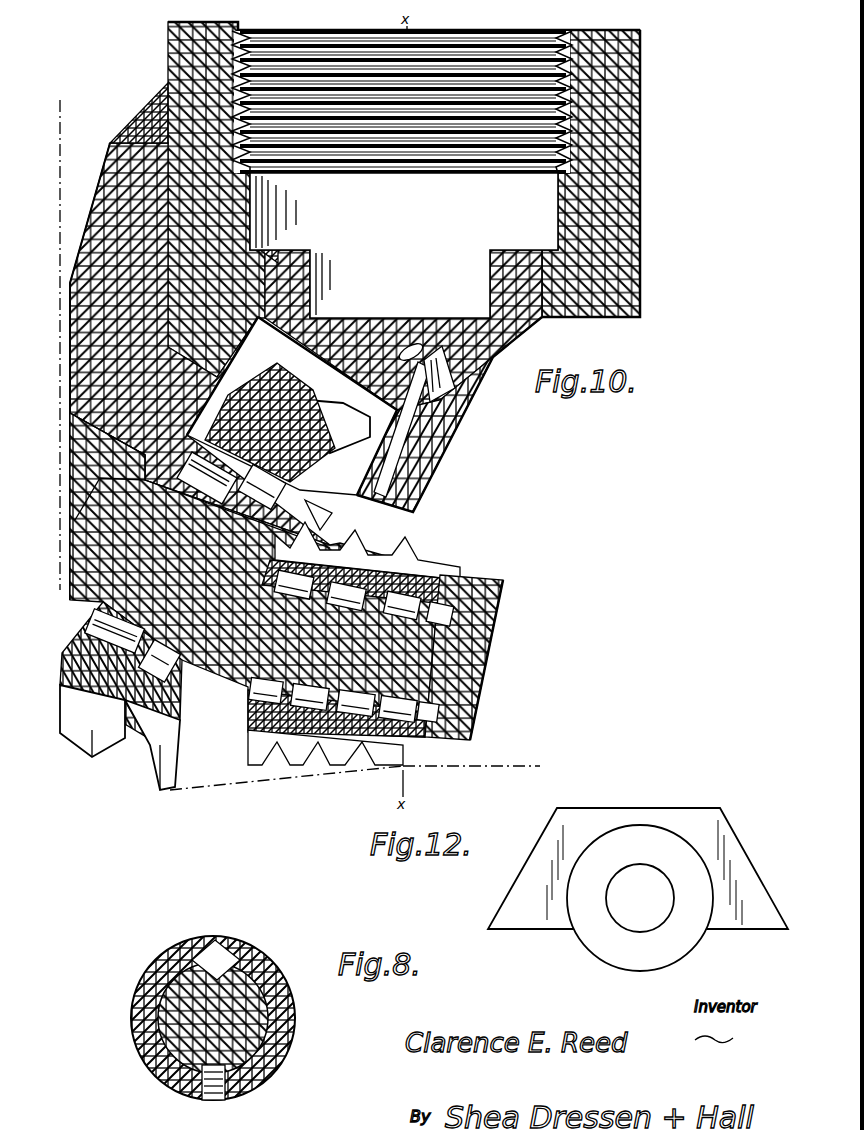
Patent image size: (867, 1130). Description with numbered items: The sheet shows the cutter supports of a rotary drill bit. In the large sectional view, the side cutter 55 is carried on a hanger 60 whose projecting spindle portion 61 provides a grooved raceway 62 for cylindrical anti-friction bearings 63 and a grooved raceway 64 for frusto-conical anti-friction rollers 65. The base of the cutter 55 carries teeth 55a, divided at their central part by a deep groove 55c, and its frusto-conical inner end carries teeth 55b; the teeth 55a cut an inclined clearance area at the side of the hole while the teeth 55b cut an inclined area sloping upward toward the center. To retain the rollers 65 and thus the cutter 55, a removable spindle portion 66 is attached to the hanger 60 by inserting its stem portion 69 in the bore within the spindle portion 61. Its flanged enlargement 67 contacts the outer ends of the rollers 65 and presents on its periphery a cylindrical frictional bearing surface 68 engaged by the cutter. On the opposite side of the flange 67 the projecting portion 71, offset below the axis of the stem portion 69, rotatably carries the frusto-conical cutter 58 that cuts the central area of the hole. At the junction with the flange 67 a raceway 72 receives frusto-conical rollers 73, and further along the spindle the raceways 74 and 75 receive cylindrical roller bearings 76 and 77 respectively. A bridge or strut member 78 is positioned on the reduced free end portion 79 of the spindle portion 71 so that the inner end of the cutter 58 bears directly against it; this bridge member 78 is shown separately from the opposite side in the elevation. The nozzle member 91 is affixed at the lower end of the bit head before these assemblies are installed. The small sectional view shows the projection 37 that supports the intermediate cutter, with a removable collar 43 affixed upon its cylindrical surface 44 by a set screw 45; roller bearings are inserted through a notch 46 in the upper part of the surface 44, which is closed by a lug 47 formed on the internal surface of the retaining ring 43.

In FIG. 10, the hanger 60 is at (83, 383).
In FIG. 10, the nozzle member 91 is at (405, 265).
In FIG. 10, the projecting spindle portion 61 is at (240, 578).
In FIG. 10, the cylindrical frictional bearing surface 68 is at (307, 437).
In FIG. 10, the removable spindle portion 66 is at (352, 460).
In FIG. 10, the stem portion 69 is at (98, 507).
In FIG. 10, the projecting portion 71 is at (330, 627).
In FIG. 10, the frusto-conical cutter 58 is at (405, 585).
In FIG. 10, the bridge or strut member 78 is at (477, 590).
In FIG. 12, the bridge or strut member 78 is at (662, 817).
In FIG. 10, the reduced free end portion 79 is at (478, 660).
In FIG. 10, the frusto-conical anti-friction rollers 73 is at (267, 705).
In FIG. 10, the raceway 74 is at (310, 708).
In FIG. 10, the cylindrical anti-friction roller bearings 76 is at (348, 712).
In FIG. 10, the cylindrical anti-friction roller bearings 77 is at (396, 718).
In FIG. 10, the raceway 75 is at (410, 720).
In FIG. 10, the raceway 72 is at (247, 707).
In FIG. 10, the flanged enlargement 67 is at (223, 702).
In FIG. 10, the grooved raceway 64 is at (206, 708).
In FIG. 10, the side cutter 55 is at (68, 665).
In FIG. 10, the grooved raceway 62 is at (90, 622).
In FIG. 10, the cylindrical anti-friction bearings 63 is at (97, 630).
In FIG. 10, the frusto-conical anti-friction rollers 65 is at (148, 672).
In FIG. 10, the deep groove 55c is at (118, 737).
In FIG. 10, the teeth 55a is at (92, 750).
In FIG. 10, the teeth 55b is at (158, 792).
In FIG. 8, the removable collar 43 is at (150, 978).
In FIG. 8, the projection 37 is at (260, 1018).
In FIG. 8, the notch 46 is at (216, 960).
In FIG. 8, the lug 47 is at (240, 965).
In FIG. 8, the cylindrical surface 44 is at (268, 978).
In FIG. 8, the set screw 45 is at (205, 1100).